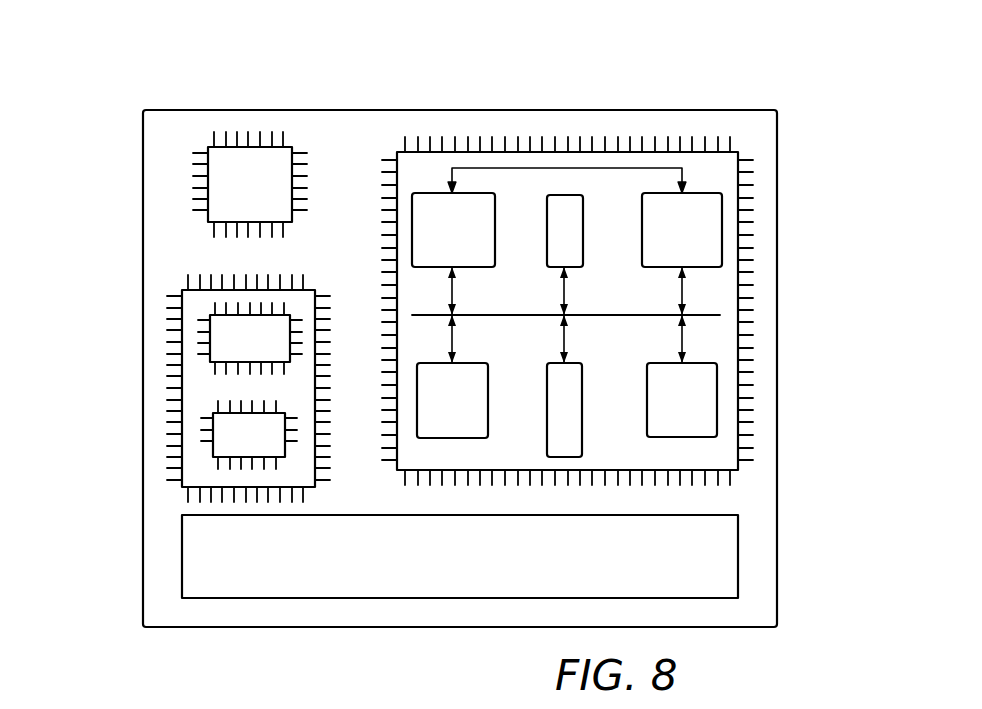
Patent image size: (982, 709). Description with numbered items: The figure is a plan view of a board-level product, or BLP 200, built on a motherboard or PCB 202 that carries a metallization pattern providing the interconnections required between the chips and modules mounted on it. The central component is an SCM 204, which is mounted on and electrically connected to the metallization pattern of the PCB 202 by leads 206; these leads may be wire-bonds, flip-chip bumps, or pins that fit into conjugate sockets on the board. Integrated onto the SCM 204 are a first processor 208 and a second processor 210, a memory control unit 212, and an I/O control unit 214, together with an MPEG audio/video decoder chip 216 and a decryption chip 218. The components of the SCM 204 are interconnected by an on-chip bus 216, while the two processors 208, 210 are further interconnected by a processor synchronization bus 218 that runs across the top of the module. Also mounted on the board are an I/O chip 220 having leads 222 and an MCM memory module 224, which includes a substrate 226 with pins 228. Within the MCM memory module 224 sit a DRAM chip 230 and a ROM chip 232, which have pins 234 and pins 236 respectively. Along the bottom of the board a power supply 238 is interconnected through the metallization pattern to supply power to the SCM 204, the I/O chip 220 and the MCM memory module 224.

The board-level-product (BLP) 200 is at (162, 90).
The PCB 202 is at (523, 326).
The SCM 204 is at (724, 174).
The leads 206 is at (745, 318).
The first processor 208 is at (471, 198).
The second processor 210 is at (700, 198).
The memory control unit 212 is at (478, 409).
The I/O control unit 214 is at (705, 400).
The MPEG audio/video decoder chip 216 is at (570, 202).
The decryption chip 218 is at (632, 168).
The I/O chip 220 is at (194, 140).
The leads 222 is at (225, 137).
The MCM memory module 224 is at (441, 326).
The substrate 226 is at (195, 302).
The pins 228 is at (250, 283).
The DRAM chip 230 is at (287, 319).
The ROM chip 232 is at (295, 444).
The pins 234 is at (292, 308).
The pins 236 is at (290, 462).
The power supply 238 is at (738, 544).